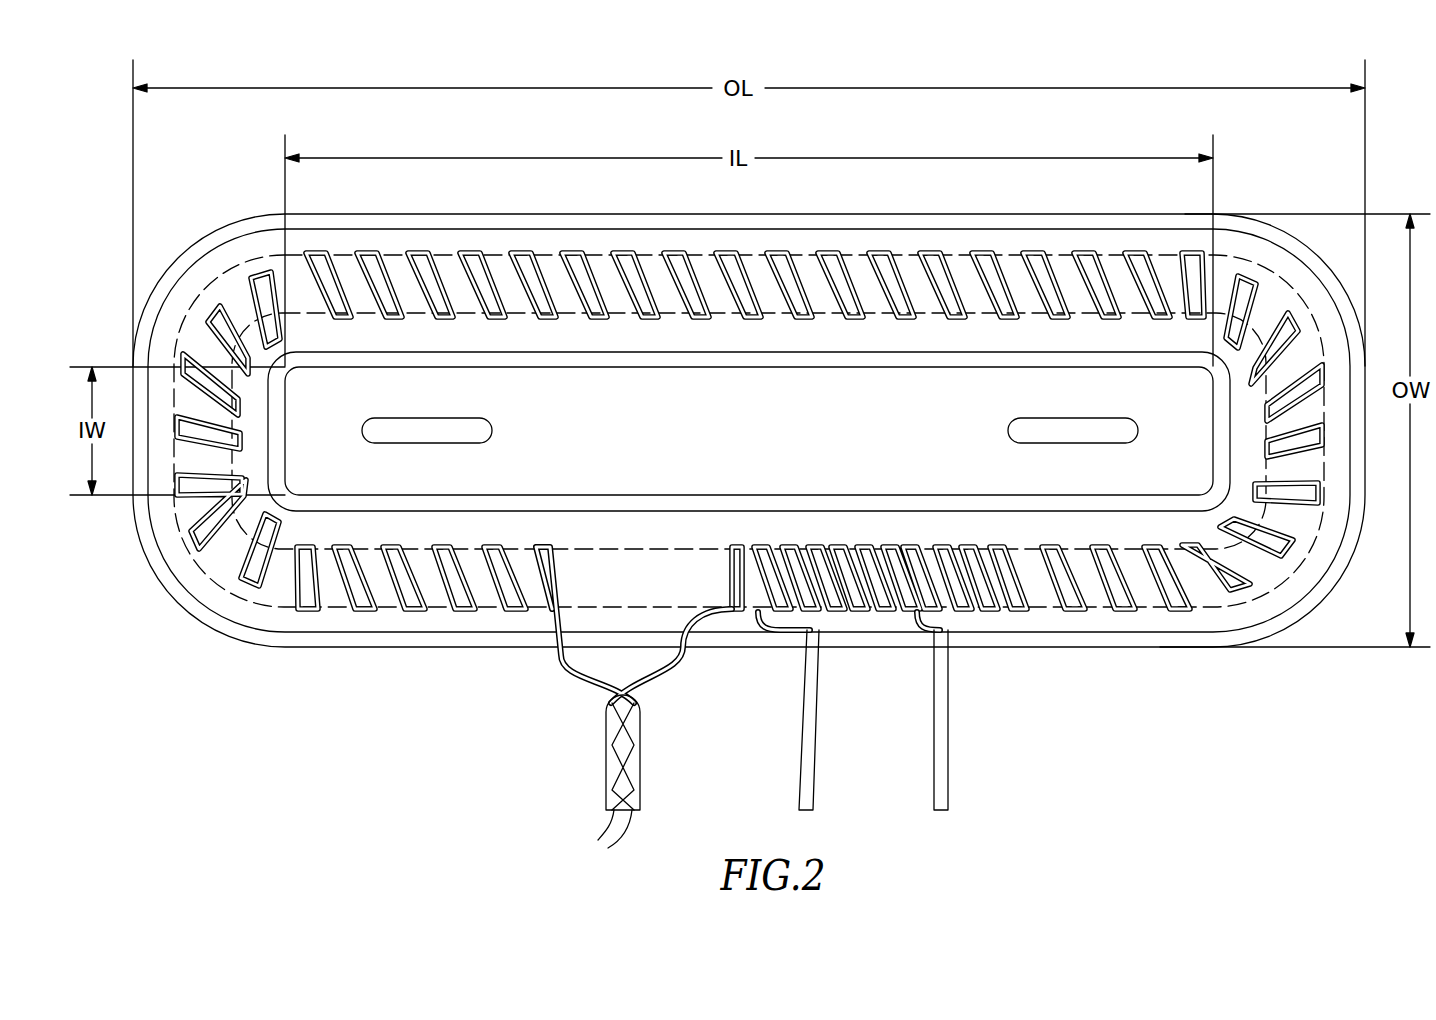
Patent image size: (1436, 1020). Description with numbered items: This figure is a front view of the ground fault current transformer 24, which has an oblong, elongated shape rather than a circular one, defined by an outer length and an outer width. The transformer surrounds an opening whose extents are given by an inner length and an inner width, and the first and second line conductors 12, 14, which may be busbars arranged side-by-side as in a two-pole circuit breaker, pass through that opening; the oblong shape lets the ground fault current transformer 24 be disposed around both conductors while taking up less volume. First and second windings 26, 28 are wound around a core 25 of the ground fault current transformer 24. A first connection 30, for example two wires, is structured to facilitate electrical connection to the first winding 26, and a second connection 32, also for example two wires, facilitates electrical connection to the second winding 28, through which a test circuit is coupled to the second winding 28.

The first line conductor 12 is at (486, 420).
The second line conductor 14 is at (1013, 420).
The ground fault current transformer 24 is at (1180, 656).
The core 25 is at (652, 550).
The first winding 26 is at (552, 543).
The second winding 28 is at (762, 543).
The first connection 30 is at (609, 843).
The second connection 32 is at (820, 692).